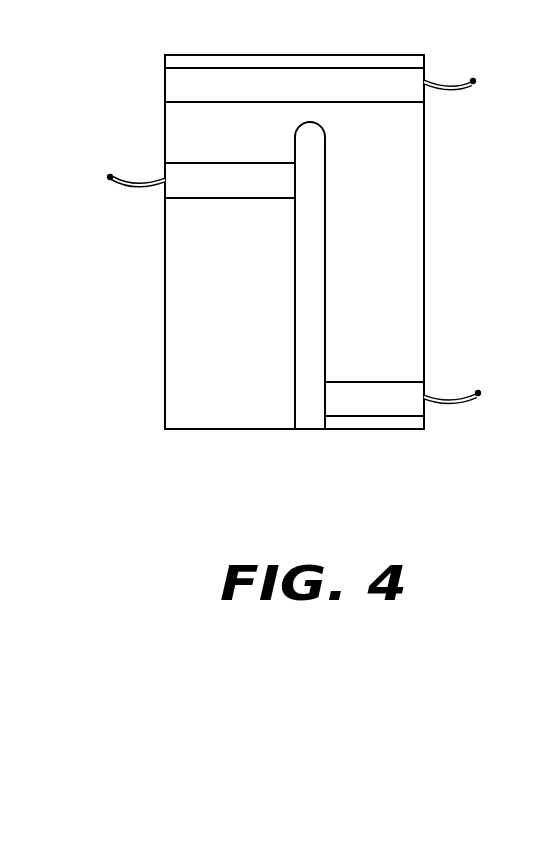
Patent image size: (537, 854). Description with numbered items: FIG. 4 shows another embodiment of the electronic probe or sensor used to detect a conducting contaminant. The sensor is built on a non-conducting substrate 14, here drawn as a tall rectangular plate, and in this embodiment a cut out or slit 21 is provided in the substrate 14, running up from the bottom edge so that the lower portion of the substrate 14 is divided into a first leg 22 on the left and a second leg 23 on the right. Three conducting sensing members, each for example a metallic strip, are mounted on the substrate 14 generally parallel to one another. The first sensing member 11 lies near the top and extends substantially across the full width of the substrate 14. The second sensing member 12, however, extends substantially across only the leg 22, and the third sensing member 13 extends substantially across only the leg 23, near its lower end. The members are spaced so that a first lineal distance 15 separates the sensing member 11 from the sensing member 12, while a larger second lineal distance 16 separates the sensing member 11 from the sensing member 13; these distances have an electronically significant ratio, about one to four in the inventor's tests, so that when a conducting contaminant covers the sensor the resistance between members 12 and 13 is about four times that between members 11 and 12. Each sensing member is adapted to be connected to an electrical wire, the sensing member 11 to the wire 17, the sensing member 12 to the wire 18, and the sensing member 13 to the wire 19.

The conducting sensing member 11 is at (186, 90).
The conducting sensing member 12 is at (187, 188).
The conducting sensing member 13 is at (413, 392).
The non-conducting substrate 14 is at (425, 170).
The first lineal distance 15 is at (171, 135).
The second lineal distance 16 is at (410, 255).
The electrical wire 17 is at (470, 74).
The electrical wire 18 is at (117, 172).
The electrical wire 19 is at (474, 392).
The slit 21 is at (308, 413).
The leg 22 is at (191, 427).
The leg 23 is at (408, 425).